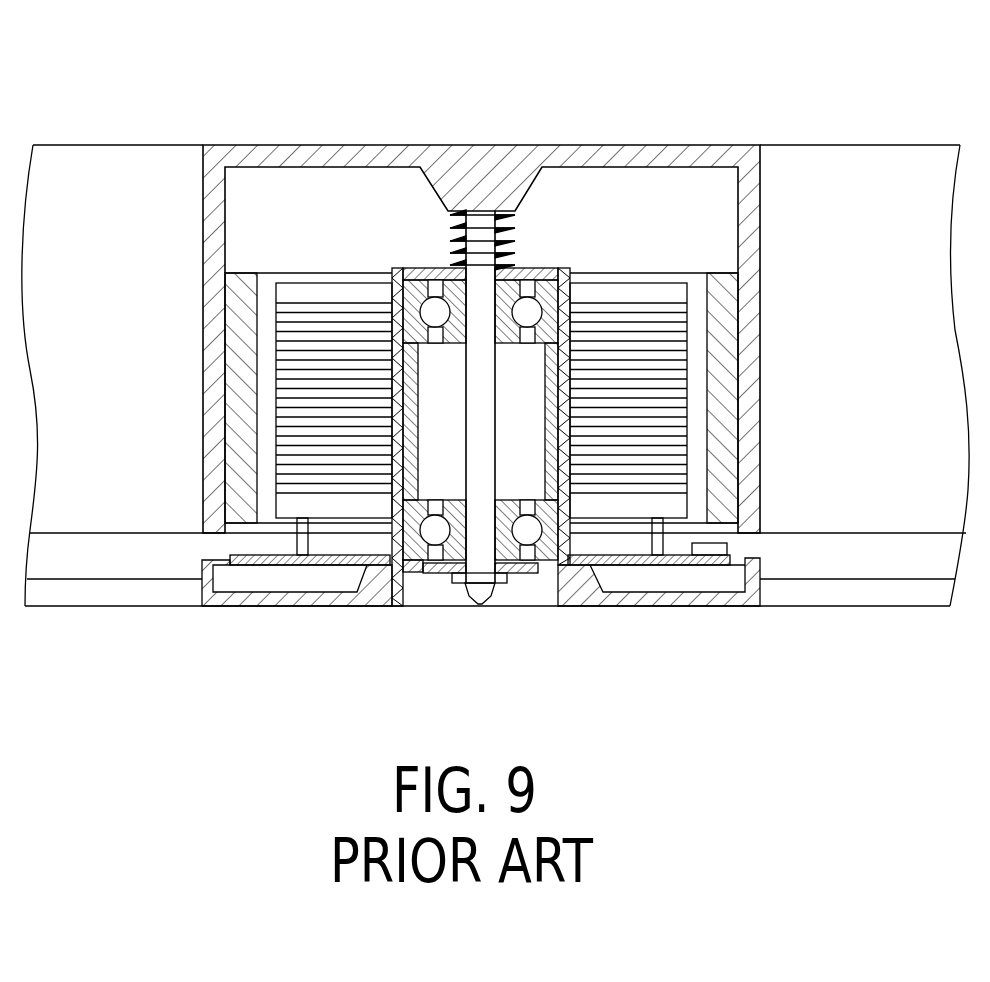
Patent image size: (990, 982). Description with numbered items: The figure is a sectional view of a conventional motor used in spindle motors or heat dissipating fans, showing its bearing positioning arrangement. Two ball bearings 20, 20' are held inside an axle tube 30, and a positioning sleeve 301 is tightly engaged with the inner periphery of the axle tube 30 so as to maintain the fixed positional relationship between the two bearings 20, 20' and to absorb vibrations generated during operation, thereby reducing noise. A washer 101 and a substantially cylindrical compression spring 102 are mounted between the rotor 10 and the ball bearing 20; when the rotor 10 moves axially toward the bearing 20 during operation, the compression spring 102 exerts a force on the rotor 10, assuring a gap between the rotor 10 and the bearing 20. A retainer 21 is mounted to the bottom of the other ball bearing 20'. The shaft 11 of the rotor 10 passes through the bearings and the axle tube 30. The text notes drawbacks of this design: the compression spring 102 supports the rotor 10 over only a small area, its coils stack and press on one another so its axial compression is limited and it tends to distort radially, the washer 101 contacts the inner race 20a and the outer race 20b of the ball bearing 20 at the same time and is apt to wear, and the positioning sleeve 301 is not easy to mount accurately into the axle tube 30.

The rotor 10 is at (315, 155).
The washer 101 is at (430, 278).
The compression spring 102 is at (493, 295).
The shaft 11 is at (481, 295).
The ball bearing 20 is at (497, 171).
The ball bearing 20' is at (457, 621).
The inner race 20a is at (456, 293).
The outer race 20b is at (402, 268).
The retainer 21 is at (462, 580).
The axle tube 30 is at (570, 310).
The positioning sleeve 301 is at (395, 380).